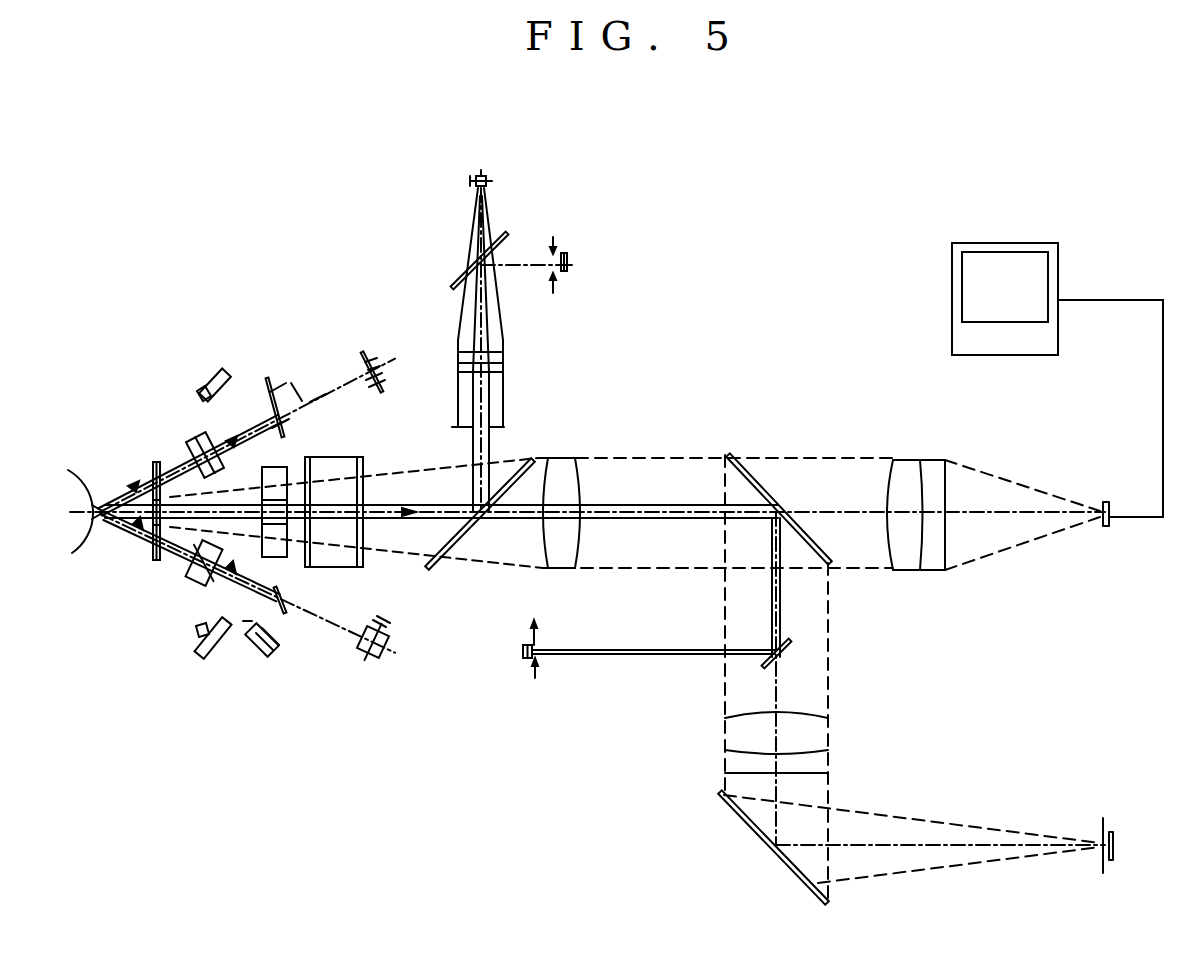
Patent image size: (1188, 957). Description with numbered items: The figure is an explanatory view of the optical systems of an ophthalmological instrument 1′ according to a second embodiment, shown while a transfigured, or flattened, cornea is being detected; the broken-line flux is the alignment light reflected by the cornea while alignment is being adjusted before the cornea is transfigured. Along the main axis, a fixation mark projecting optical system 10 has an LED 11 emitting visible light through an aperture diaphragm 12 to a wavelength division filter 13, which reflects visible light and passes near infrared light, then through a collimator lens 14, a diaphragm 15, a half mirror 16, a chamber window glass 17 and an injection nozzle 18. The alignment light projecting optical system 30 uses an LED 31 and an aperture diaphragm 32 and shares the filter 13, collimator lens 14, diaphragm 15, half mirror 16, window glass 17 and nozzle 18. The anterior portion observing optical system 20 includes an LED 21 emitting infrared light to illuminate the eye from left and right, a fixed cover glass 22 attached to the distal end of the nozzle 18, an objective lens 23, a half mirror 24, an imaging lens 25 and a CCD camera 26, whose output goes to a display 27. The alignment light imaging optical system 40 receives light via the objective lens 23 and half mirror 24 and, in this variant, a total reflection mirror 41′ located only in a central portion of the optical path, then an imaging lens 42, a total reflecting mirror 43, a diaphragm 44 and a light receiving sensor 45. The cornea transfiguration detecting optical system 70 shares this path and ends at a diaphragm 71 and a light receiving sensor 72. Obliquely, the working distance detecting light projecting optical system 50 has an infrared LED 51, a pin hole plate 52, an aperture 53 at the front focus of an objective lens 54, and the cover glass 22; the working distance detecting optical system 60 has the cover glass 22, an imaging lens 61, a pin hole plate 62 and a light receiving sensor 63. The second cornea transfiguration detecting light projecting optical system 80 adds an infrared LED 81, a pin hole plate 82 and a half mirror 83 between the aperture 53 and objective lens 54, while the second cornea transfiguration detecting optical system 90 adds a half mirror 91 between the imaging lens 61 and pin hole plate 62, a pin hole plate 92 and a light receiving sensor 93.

The ophthalmological instrument 1′ is at (786, 272).
The fixation mark projecting optical system 10 is at (570, 247).
The LED 11 is at (570, 258).
The aperture diaphragm 12 is at (556, 245).
The wavelength division filter 13 is at (503, 236).
The collimator lens 14 is at (498, 360).
The diaphragm 15 is at (503, 427).
The half mirror 16 is at (533, 457).
The chamber window glass 17 is at (363, 462).
The injection nozzle 18 is at (170, 457).
The anterior portion observing optical system 20 is at (944, 411).
The LED 21 is at (218, 373).
The fixed cover glass 22 is at (158, 563).
The objective lens 23 is at (560, 568).
The half mirror 24 is at (755, 470).
The imaging lens 25 is at (905, 472).
The CCD camera 26 is at (1108, 528).
The monitor 27 is at (1060, 333).
The alignment light projecting optical system 30 is at (477, 333).
The LED 31 is at (490, 180).
The aperture diaphragm 32 is at (466, 188).
The alignment light imaging optical system 40 is at (932, 812).
The total reflection mirror 41′ is at (790, 640).
The imaging lens 42 is at (817, 732).
The total reflecting mirror 43 is at (743, 822).
The diaphragm 44 is at (1103, 873).
The light receiving sensor 45 is at (1113, 852).
The working distance detecting light projecting optical system 50 is at (372, 360).
The infrared LED 51 is at (385, 378).
The pin hole plate 52 is at (362, 352).
The aperture 53 is at (318, 404).
The objective lens 54 is at (195, 440).
The working distance detecting optical system 60 is at (395, 660).
The imaging lens 61 is at (188, 577).
The pin hole plate 62 is at (378, 622).
The light receiving sensor 63 is at (383, 637).
The cornea transfiguration detecting optical system 70 is at (624, 674).
The diaphragm 71 is at (537, 677).
The light receiving sensor 72 is at (523, 657).
The second cornea transfiguration detecting light projecting optical system 80 is at (305, 370).
The infrared LED 81 is at (260, 388).
The pin hole plate 82 is at (305, 393).
The half mirror 83 is at (287, 430).
The second cornea transfiguration detecting optical system 90 is at (278, 660).
The half mirror 91 is at (290, 617).
The pin hole plate 92 is at (250, 623).
The light receiving sensor 93 is at (266, 643).